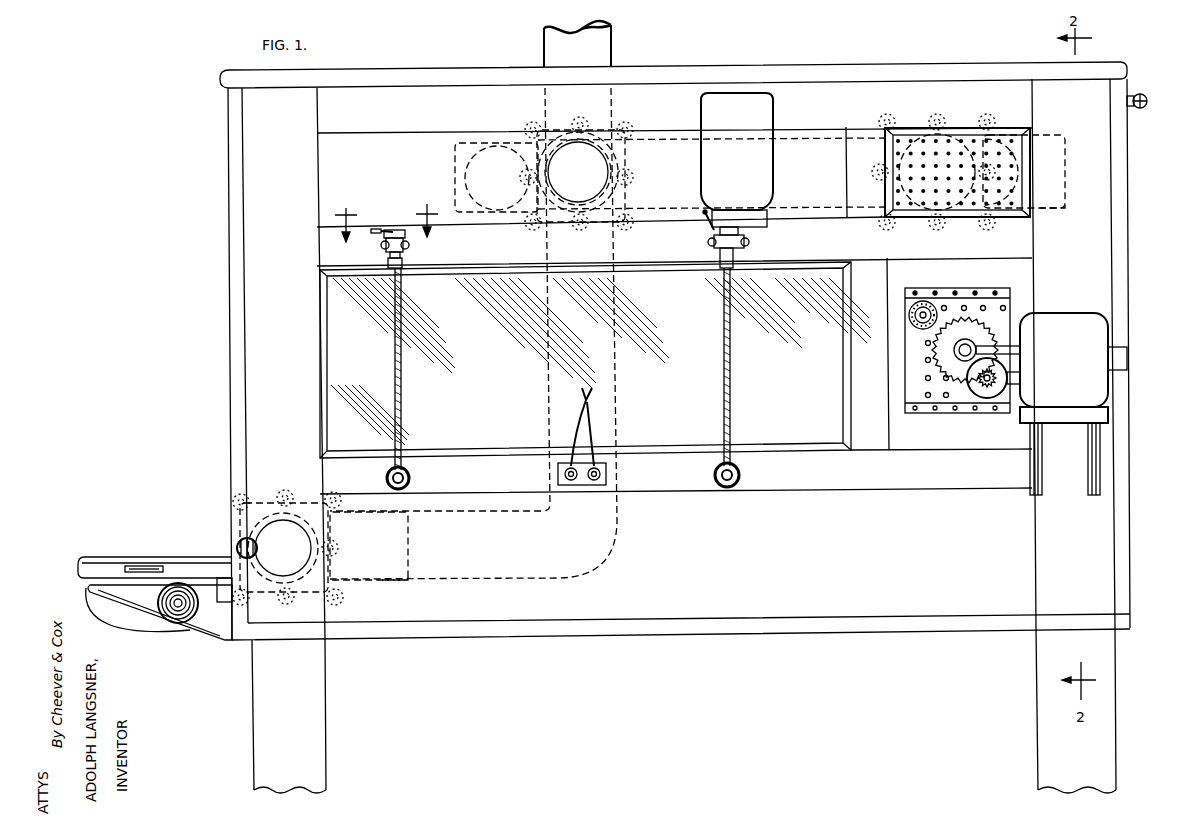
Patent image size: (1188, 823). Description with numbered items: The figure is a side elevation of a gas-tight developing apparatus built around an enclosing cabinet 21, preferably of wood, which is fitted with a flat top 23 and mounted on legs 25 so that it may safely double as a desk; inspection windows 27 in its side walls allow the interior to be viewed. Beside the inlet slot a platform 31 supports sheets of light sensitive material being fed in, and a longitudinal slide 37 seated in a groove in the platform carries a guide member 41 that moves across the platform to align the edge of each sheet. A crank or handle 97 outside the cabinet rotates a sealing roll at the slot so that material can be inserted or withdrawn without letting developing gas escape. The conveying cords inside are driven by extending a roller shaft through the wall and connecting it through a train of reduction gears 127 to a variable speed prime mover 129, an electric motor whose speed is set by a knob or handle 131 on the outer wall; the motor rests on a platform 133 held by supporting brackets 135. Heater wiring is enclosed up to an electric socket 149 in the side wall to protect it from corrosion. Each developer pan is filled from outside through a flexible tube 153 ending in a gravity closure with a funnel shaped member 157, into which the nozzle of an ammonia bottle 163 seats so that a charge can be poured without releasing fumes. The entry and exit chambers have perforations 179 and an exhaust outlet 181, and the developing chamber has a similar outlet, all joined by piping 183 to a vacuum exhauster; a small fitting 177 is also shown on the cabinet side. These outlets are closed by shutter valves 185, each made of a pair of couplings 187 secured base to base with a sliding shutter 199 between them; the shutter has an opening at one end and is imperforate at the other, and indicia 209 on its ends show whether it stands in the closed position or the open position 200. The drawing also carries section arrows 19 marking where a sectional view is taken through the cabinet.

The section line arrows 19 is at (386, 214).
The enclosing cabinet 21 is at (227, 248).
The flat top 23 is at (472, 70).
The legs 25 is at (313, 697).
The inspection windows 27 is at (337, 328).
The platform 31 is at (112, 565).
The longitudinal slide 37 is at (145, 565).
The guide member 41 is at (178, 557).
The crank or handle 97 is at (238, 540).
The train of reduction gears 127 is at (966, 392).
The variable speed prime mover 129 is at (1065, 322).
The knob or handle 131 is at (912, 317).
The platform 133 is at (1062, 424).
The supporting brackets 135 is at (1095, 470).
The electric socket 149 is at (585, 486).
The flexible tube 153 is at (405, 371).
The funnel shaped member 157 is at (410, 248).
The bottle 163 is at (733, 100).
The valve fitting 177 is at (1147, 103).
The perforations 179 is at (890, 190).
The exhaust outlet 181 is at (622, 160).
The piping 183 is at (600, 48).
The shutter valves 185 is at (525, 140).
The couplings 187 is at (590, 228).
The shutter 199 is at (1045, 211).
The open position indicator 200 is at (1065, 168).
The indicia 209 is at (455, 165).